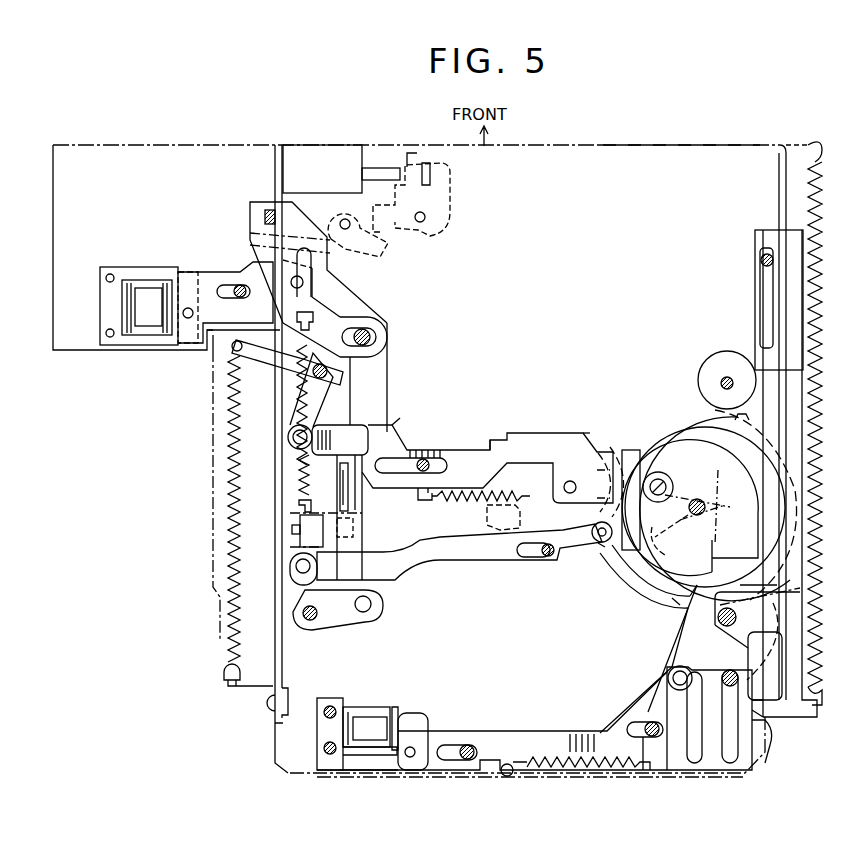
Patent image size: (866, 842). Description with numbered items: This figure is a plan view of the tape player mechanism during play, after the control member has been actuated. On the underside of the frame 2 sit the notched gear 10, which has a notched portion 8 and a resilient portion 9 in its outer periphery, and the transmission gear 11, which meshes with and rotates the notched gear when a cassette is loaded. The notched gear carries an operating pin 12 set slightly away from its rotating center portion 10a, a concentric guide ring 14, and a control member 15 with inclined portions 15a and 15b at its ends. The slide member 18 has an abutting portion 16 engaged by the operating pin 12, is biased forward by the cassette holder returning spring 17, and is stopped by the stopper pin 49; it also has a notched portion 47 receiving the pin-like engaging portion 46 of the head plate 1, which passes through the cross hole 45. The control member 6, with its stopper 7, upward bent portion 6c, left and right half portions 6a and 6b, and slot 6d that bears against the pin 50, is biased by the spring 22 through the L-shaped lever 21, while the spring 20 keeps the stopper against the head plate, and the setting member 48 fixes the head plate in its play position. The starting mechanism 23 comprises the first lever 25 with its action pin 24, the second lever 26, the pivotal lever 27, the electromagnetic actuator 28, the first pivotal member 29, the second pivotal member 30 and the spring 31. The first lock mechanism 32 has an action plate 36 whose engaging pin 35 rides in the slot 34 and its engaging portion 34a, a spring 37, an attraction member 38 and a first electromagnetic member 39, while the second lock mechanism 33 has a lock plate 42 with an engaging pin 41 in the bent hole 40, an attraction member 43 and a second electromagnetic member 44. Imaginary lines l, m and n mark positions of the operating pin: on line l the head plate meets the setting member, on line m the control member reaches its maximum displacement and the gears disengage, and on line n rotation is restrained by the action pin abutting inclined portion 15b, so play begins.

The frame 2 is at (600, 158).
The electromagnetic actuator 28 is at (320, 158).
The first pivotal member 29 is at (446, 188).
The second pivotal member 30 is at (388, 250).
The second electromagnetic member 44 is at (143, 282).
The attraction member 43 is at (187, 285).
The lock plate 42 is at (215, 280).
The second lock mechanism 33 is at (217, 346).
The bent hole 40 is at (340, 295).
The engaging pin 41 is at (312, 280).
The second lever 26 is at (388, 366).
The L-shaped lever 21 is at (255, 360).
The spring 22 is at (228, 650).
The spring 31 is at (298, 470).
The stopper 7 is at (345, 497).
The setting member 48 is at (298, 530).
The head plate 1 is at (330, 528).
The control member 6 is at (522, 424).
The left half portion 6a is at (395, 432).
The right half portion 6b is at (583, 430).
The upward bent portion 6c is at (500, 442).
The slot 6d is at (412, 448).
The pin 50 is at (438, 457).
The resilient portion 9 is at (597, 465).
The operating pin 12 is at (648, 476).
The guide ring 14 is at (660, 432).
The notched portion 8 is at (680, 412).
The notched gear 10 is at (760, 428).
The rotating center portion 10a is at (714, 510).
The imaginary line n is at (684, 470).
The imaginary line m is at (700, 528).
The imaginary line l is at (675, 545).
The abutting portion 16 is at (735, 555).
The transmission gear 11 is at (715, 362).
The control member 15 is at (615, 590).
The inclined portion 15a is at (680, 603).
The inclined portion 15b is at (600, 560).
The action pin 24 is at (592, 528).
The first lever 25 is at (450, 562).
The starting mechanism 23 is at (385, 585).
The pivotal lever 27 is at (312, 622).
The spring 20 is at (460, 500).
The first lock mechanism 32 is at (491, 722).
The action plate 36 is at (557, 745).
The spring 37 is at (555, 776).
The attraction member 38 is at (405, 715).
The first electromagnetic member 39 is at (365, 718).
The slot 34 is at (690, 772).
The engaging portion 34a is at (670, 672).
The engaging pin 35 is at (672, 680).
The cross hole 45 is at (752, 680).
The engaging portion 46 is at (725, 627).
The notched portion 47 is at (812, 626).
The cassette holder returning spring 17 is at (817, 668).
The stopper pin 49 is at (760, 715).
The slide member 18 is at (762, 750).